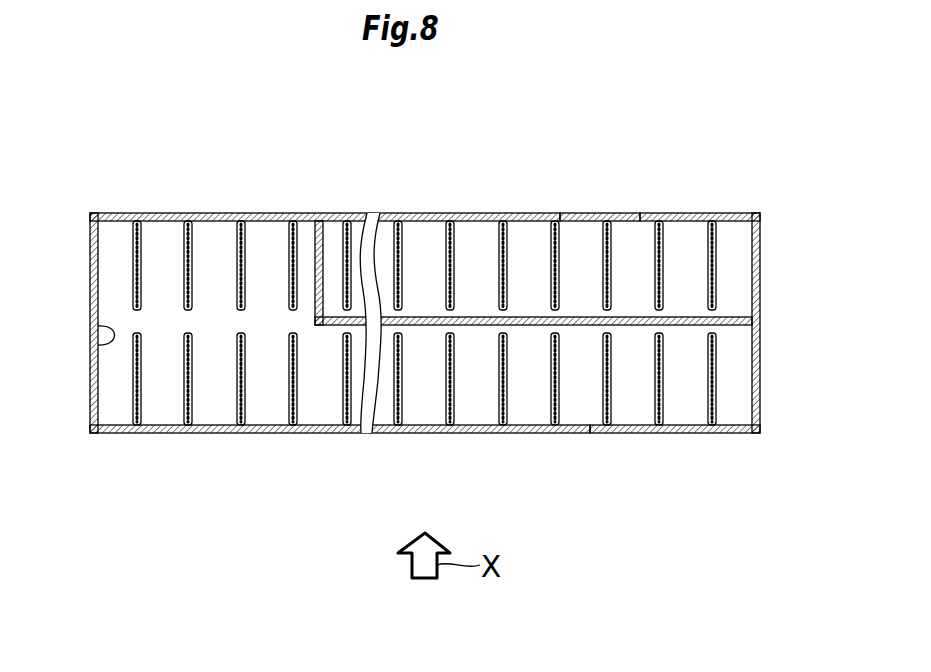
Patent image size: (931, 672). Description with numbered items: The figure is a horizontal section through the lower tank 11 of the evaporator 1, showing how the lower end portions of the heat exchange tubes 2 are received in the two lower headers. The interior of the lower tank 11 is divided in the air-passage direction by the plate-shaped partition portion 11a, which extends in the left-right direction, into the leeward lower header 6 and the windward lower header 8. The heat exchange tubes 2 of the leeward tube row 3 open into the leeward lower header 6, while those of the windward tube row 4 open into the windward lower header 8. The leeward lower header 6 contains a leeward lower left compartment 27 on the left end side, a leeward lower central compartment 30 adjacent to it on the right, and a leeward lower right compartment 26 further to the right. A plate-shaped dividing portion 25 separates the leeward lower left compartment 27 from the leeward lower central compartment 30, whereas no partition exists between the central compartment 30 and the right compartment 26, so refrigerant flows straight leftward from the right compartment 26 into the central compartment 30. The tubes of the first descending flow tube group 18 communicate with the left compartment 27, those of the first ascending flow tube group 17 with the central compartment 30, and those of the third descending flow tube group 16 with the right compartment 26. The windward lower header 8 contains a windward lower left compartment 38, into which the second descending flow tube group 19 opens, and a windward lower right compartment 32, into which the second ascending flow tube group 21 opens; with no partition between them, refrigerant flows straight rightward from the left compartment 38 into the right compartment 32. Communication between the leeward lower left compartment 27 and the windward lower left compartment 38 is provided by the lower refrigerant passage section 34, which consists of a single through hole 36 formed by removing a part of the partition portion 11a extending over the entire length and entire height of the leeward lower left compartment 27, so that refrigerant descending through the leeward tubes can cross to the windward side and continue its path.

The evaporator 1 is at (752, 108).
The heat exchange tubes 2 is at (136, 232).
The leeward tube row 3 is at (134, 269).
The windward tube row 4 is at (134, 376).
The leeward lower header 6 is at (602, 211).
The windward lower header 8 is at (617, 434).
The lower tank 11 is at (472, 143).
The partition portion 11a is at (724, 314).
The third descending flow tube group 16 is at (670, 228).
The first ascending flow tube group 17 is at (400, 226).
The first descending flow tube group 18 is at (196, 241).
The second descending flow tube group 19 is at (246, 393).
The second ascending flow tube group 21 is at (655, 403).
The dividing portion 25 is at (317, 220).
The leeward lower right compartment 26 is at (673, 230).
The leeward lower left compartment 27 is at (148, 213).
The leeward lower central compartment 30 is at (475, 212).
The windward lower right compartment 32 is at (563, 434).
The lower refrigerant passage section 34 is at (317, 321).
The through hole 36 is at (92, 345).
The windward lower left compartment 38 is at (162, 433).